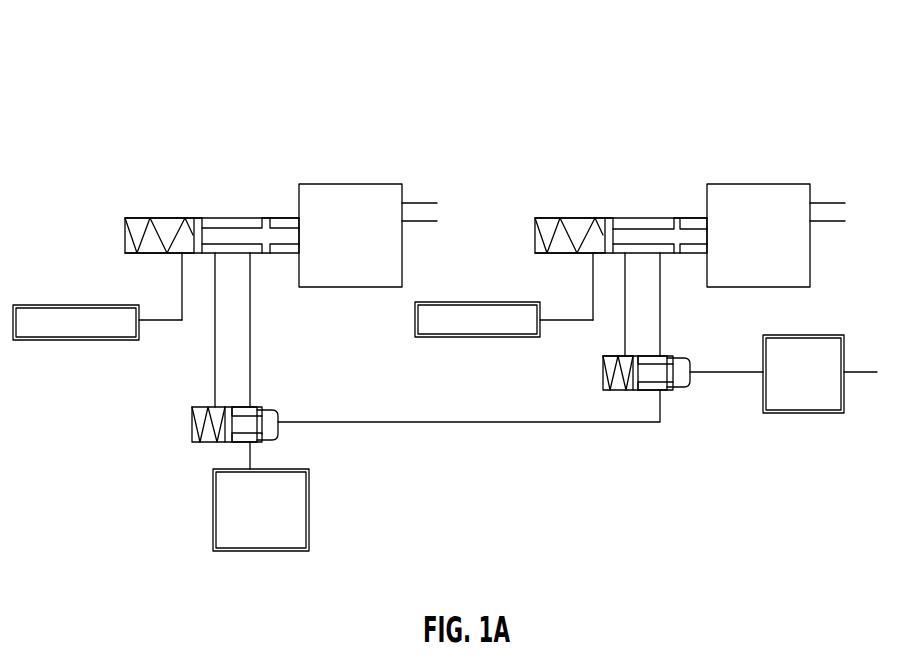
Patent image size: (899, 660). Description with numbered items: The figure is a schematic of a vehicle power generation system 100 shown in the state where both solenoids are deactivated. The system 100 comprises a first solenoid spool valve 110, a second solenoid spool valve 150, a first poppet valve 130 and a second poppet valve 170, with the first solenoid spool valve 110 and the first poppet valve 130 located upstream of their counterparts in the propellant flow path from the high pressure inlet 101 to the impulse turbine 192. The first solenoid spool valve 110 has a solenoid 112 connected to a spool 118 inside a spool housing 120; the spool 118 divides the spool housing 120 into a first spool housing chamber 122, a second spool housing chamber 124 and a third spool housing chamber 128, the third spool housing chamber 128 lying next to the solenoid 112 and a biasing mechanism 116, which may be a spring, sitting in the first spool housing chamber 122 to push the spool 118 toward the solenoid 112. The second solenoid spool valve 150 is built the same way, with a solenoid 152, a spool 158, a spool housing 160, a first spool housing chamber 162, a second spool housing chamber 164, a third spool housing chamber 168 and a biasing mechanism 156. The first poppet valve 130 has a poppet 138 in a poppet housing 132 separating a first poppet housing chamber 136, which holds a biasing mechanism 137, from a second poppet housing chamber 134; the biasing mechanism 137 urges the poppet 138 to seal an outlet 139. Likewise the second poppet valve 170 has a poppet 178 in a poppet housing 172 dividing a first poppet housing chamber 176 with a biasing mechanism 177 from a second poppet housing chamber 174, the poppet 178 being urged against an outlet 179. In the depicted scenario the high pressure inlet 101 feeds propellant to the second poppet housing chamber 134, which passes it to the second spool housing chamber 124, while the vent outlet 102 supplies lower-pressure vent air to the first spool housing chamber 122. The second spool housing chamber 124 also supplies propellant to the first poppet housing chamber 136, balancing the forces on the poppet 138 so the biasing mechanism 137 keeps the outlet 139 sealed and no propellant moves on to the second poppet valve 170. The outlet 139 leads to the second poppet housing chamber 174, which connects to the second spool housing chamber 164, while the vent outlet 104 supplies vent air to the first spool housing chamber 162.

The vehicle power generation system 100 is at (160, 92).
The high pressure inlet 101 is at (275, 551).
The vent outlet 102 is at (93, 340).
The vent outlet 104 is at (516, 337).
The first solenoid spool valve 110 is at (164, 195).
The solenoid 112 is at (325, 184).
The biasing mechanism 116 is at (137, 218).
The spool 118 is at (267, 240).
The spool housing 120 is at (175, 218).
The first spool housing chamber 122 is at (148, 253).
The second spool housing chamber 124 is at (234, 223).
The third spool housing chamber 128 is at (295, 216).
The first poppet valve 130 is at (156, 415).
The poppet housing 132 is at (273, 408).
The second poppet housing chamber 134 is at (252, 407).
The first poppet housing chamber 136 is at (220, 445).
The biasing mechanism 137 is at (197, 420).
The poppet 138 is at (257, 426).
The outlet 139 is at (280, 422).
The second solenoid spool valve 150 is at (577, 188).
The solenoid 152 is at (735, 184).
The biasing mechanism 156 is at (555, 218).
The spool 158 is at (672, 253).
The spool housing 160 is at (588, 218).
The first spool housing chamber 162 is at (560, 253).
The second spool housing chamber 164 is at (640, 218).
The third spool housing chamber 168 is at (705, 216).
The second poppet valve 170 is at (582, 373).
The poppet housing 172 is at (681, 358).
The second poppet housing chamber 174 is at (665, 356).
The first poppet housing chamber 176 is at (612, 357).
The biasing mechanism 177 is at (620, 390).
The poppet 178 is at (662, 392).
The outlet 179 is at (691, 373).
The impulse turbine 192 is at (820, 335).